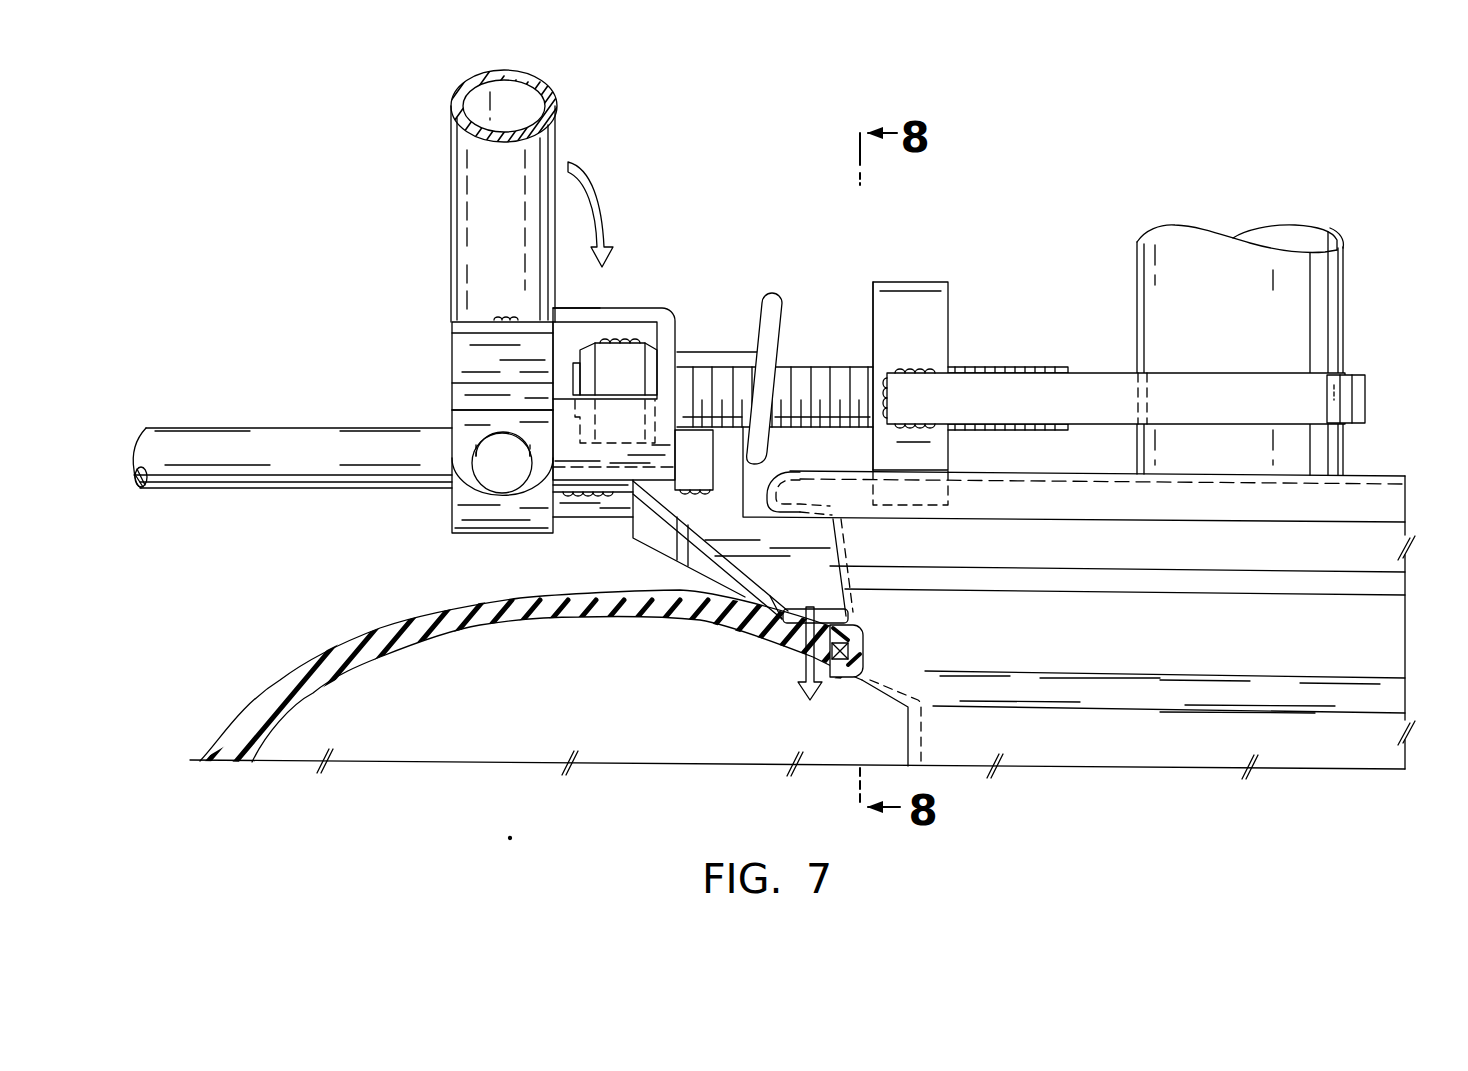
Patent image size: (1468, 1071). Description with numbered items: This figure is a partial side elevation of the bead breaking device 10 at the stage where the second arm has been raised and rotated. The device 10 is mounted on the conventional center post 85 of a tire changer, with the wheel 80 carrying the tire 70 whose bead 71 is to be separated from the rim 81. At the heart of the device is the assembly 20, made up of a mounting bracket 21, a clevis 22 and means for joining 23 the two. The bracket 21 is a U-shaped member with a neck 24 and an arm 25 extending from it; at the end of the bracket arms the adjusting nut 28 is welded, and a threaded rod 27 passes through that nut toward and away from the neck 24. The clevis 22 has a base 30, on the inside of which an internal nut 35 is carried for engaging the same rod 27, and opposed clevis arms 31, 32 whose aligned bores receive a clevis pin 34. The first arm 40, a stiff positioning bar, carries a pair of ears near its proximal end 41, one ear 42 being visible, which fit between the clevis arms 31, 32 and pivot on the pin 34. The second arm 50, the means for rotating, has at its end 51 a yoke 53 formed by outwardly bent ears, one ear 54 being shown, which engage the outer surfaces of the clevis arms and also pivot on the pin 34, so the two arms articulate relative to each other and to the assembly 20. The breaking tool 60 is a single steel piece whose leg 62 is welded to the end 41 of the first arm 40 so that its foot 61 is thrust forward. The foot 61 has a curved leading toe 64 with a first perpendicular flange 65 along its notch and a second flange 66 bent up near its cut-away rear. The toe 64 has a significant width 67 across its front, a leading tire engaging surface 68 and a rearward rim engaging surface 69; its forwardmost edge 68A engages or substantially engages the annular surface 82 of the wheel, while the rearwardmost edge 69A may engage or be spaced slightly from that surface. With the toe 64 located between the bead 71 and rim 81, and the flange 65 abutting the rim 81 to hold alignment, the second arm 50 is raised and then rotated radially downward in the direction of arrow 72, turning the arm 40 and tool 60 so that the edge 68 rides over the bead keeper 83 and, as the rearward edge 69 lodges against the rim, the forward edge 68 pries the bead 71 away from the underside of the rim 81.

The bead breaking device 10 is at (290, 197).
The assembly 20 is at (1003, 291).
The mounting bracket 21 is at (1118, 372).
The clevis 22 is at (658, 303).
The means for joining 23 is at (865, 352).
The neck 24 is at (1367, 396).
The arm 25 is at (1085, 386).
The rod 27 is at (808, 373).
The adjusting nut 28 is at (920, 297).
The base 30 is at (677, 330).
The clevis arm 31 is at (582, 452).
The clevis arm 32 is at (578, 310).
The clevis pin 34 is at (490, 462).
The internal nut 35 is at (617, 357).
The first arm 40 is at (207, 490).
The end 41 is at (695, 472).
The ear 42 is at (478, 512).
The second arm 50 is at (450, 172).
The end 51 is at (485, 309).
The yoke 53 is at (450, 413).
The ear 54 is at (472, 347).
The breaking tool 60 is at (643, 568).
The foot 61 is at (733, 353).
The leg 62 is at (575, 518).
The toe 64 is at (808, 563).
The first perpendicular flange 65 is at (770, 298).
The second flange 66 is at (707, 557).
The width 67 is at (833, 562).
The tire engaging surface 68 is at (812, 622).
The forwardmost edge 68A is at (850, 618).
The rim engaging surface 69 is at (795, 517).
The rearwardmost edge 69A is at (836, 523).
The tire 70 is at (316, 646).
The bead 71 is at (838, 668).
The arrow 72 is at (600, 181).
The wheel 80 is at (1133, 770).
The rim 81 is at (1042, 489).
The annular surface 82 is at (973, 586).
The bead keeper 83 is at (1087, 554).
The center post 85 is at (1322, 297).